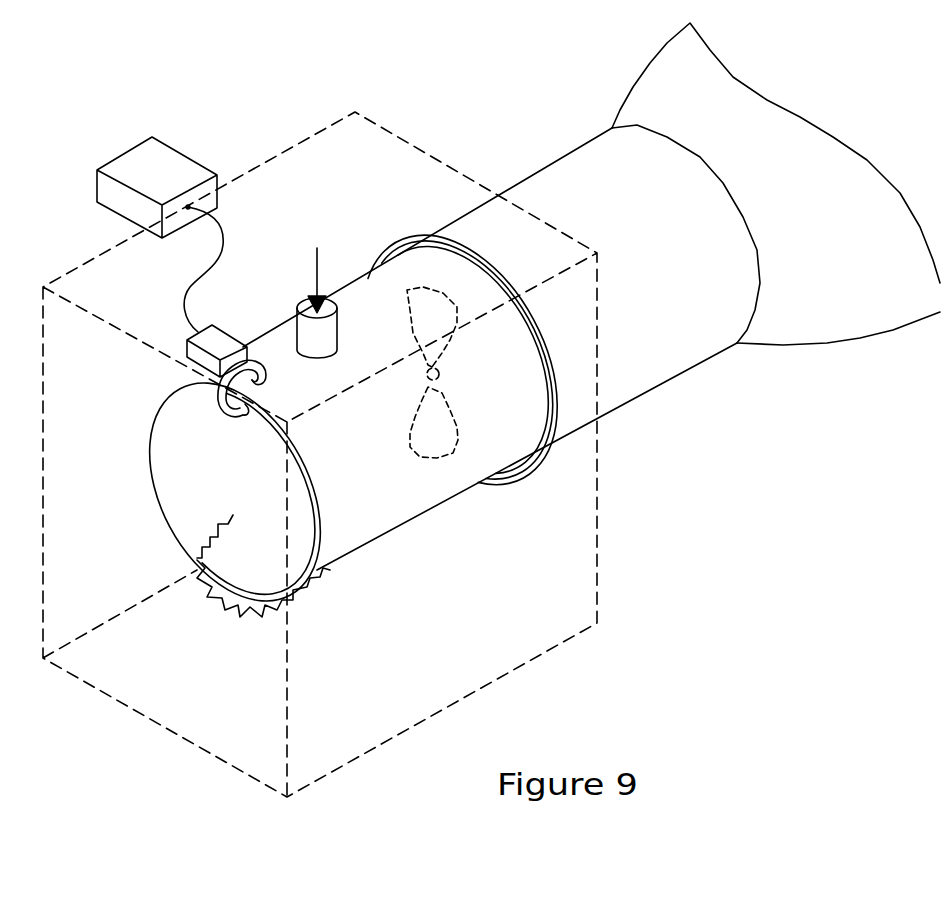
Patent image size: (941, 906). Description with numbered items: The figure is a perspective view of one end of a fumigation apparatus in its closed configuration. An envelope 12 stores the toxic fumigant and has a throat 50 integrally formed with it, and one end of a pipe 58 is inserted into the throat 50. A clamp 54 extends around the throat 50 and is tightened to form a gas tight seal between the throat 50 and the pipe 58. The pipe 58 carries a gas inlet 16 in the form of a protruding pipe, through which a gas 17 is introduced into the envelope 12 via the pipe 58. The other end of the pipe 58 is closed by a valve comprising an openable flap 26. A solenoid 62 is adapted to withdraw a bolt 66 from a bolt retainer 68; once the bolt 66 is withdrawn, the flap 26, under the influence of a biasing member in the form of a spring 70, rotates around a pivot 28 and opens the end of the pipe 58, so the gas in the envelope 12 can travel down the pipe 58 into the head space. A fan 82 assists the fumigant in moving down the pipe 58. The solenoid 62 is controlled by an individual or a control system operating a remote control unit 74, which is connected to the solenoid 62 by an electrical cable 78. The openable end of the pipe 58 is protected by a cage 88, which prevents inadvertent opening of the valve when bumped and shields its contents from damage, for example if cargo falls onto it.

The envelope 12 is at (838, 318).
The gas inlet 16 is at (299, 331).
The gas 17 is at (352, 273).
The openable flap 26 is at (183, 503).
The pivot 28 is at (282, 605).
The throat 50 is at (632, 365).
The clamp 54 is at (423, 233).
The pipe 58 is at (378, 528).
The solenoid 62 is at (185, 355).
The bolt 66 is at (228, 392).
The bolt retainer 68 is at (217, 378).
The spring 70 is at (220, 602).
The remote control unit 74 is at (172, 150).
The electrical cable 78 is at (228, 230).
The fan 82 is at (437, 447).
The cage 88 is at (548, 652).